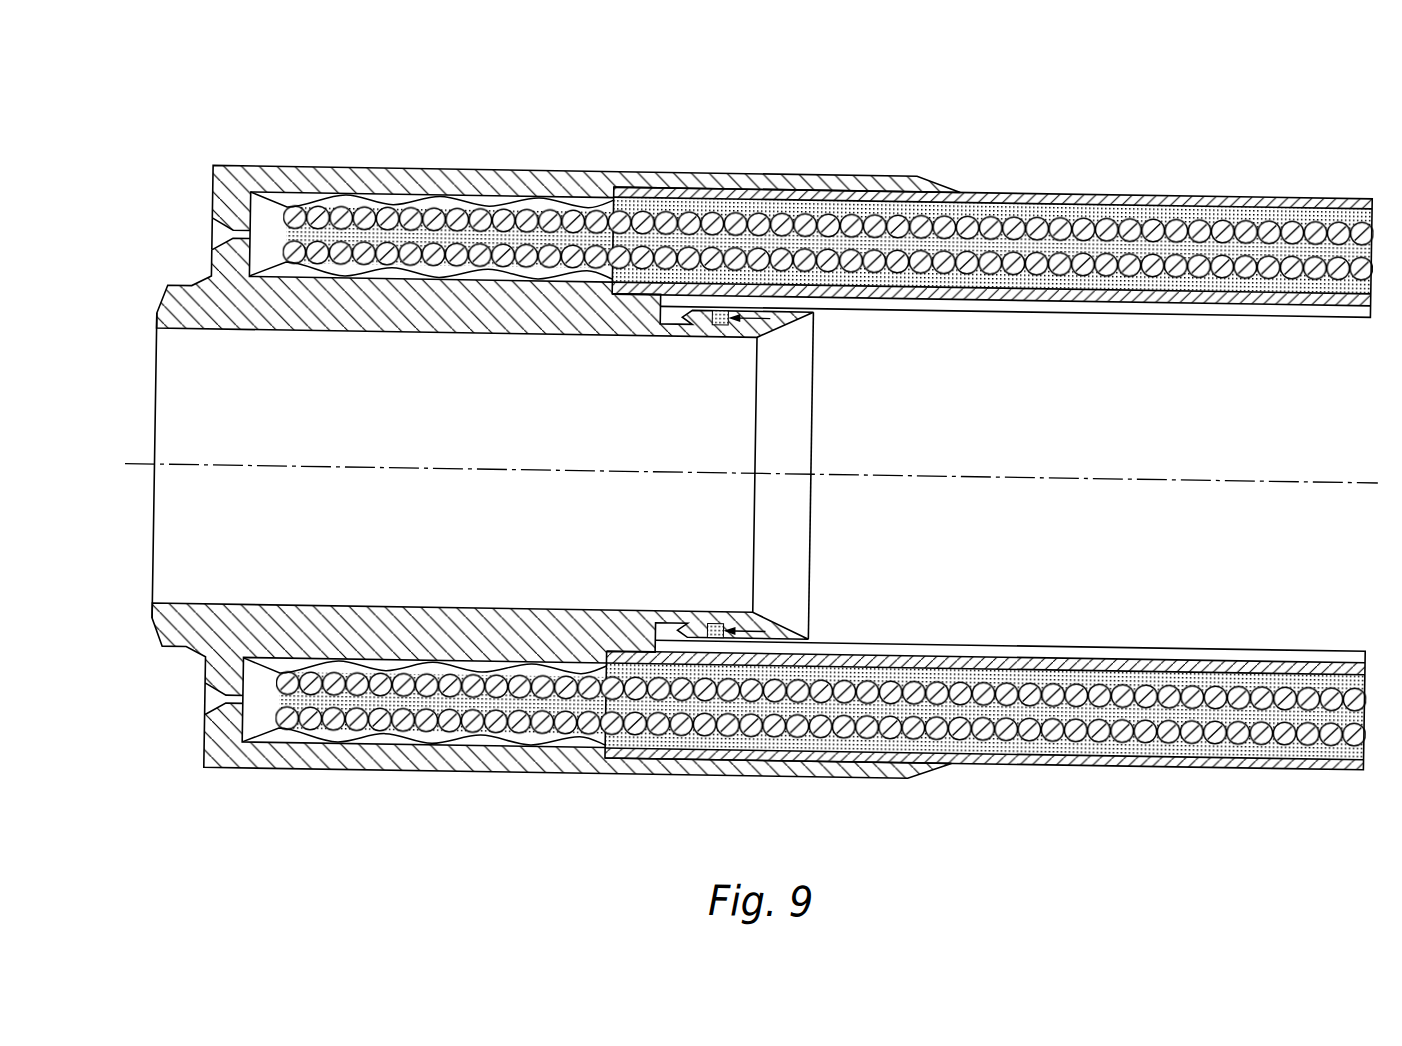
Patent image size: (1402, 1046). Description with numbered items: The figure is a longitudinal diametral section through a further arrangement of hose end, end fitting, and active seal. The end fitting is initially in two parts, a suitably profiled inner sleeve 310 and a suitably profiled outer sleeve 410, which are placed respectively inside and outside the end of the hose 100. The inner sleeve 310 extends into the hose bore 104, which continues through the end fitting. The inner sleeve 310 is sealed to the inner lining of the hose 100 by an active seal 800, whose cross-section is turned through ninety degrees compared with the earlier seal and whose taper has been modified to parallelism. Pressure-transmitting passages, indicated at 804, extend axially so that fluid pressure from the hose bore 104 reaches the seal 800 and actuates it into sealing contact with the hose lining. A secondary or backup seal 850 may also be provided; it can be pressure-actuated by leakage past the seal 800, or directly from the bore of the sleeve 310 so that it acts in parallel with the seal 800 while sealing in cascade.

The hose 100 is at (1089, 265).
The hose bore 104 is at (1285, 587).
The inner sleeve 310 is at (192, 284).
The outer sleeve 410 is at (216, 177).
The seal 800 is at (752, 604).
The retaining groove 804 is at (778, 303).
The secondary or backup seal 850 is at (681, 624).